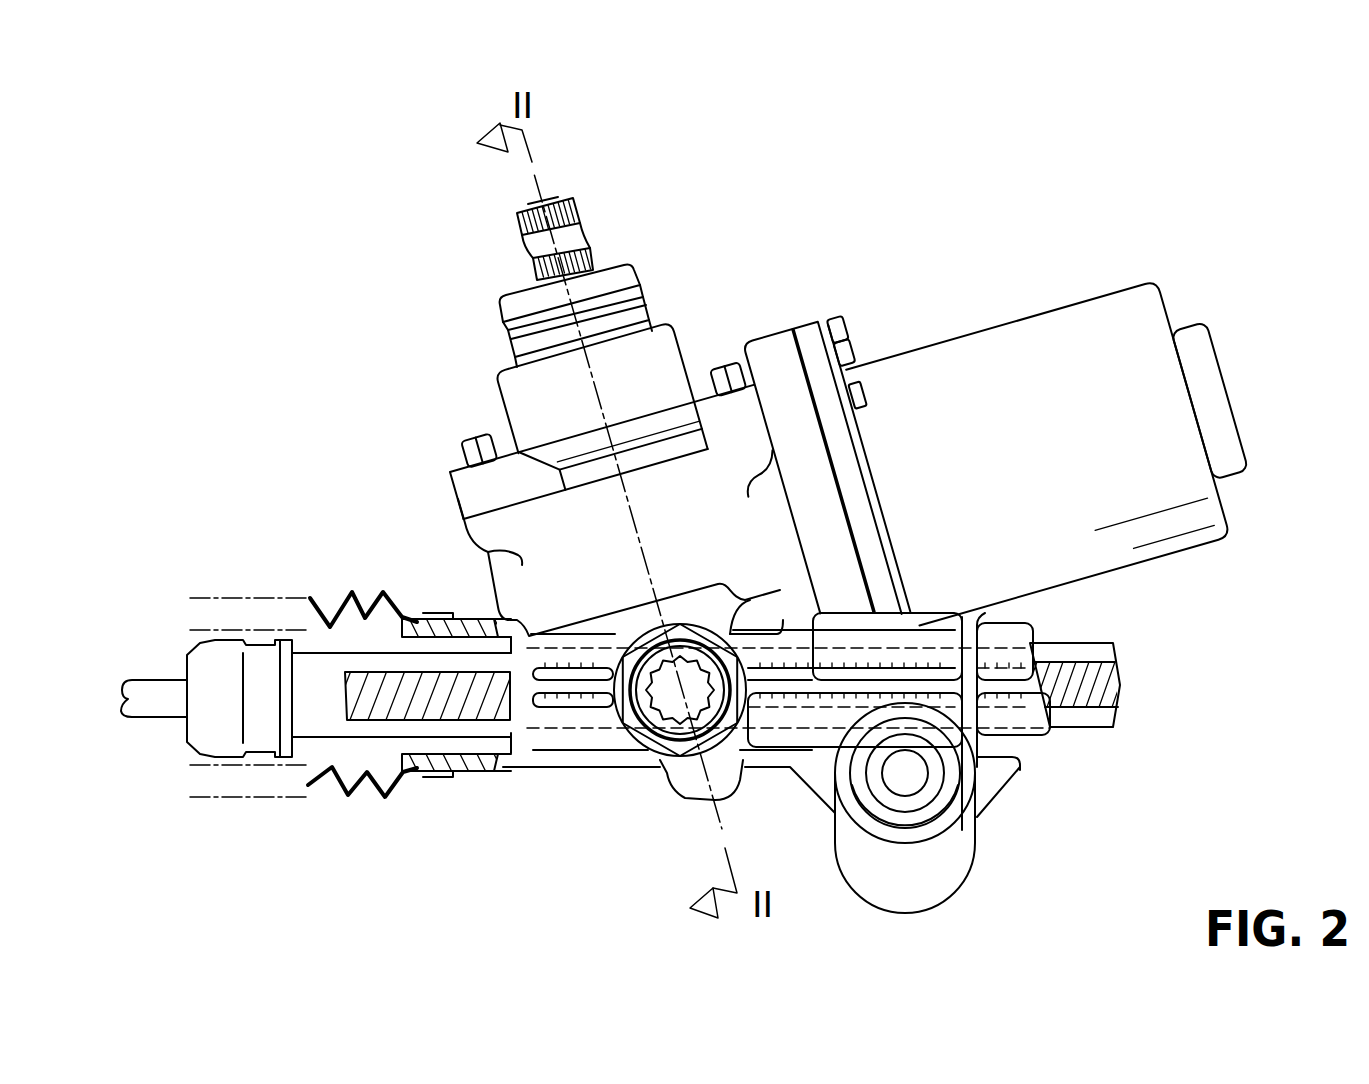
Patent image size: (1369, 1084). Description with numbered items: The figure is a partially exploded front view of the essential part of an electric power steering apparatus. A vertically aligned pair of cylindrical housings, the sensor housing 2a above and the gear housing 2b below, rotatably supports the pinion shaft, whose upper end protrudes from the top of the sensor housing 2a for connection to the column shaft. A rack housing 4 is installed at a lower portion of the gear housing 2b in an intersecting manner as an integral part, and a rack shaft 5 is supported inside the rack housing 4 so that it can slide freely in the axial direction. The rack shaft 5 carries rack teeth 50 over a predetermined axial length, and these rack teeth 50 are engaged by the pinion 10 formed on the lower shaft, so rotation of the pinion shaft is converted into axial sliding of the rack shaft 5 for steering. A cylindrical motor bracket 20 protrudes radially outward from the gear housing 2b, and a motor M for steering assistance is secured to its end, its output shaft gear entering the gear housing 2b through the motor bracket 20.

The sensor housing 2a is at (505, 407).
The gear housing 2b is at (466, 530).
The motor bracket 20 is at (773, 340).
The motor M is at (1008, 333).
The rack teeth 50 is at (1107, 645).
The rack shaft 5 is at (1100, 728).
The rack housing 4 is at (560, 768).
The pinion 10 is at (647, 764).